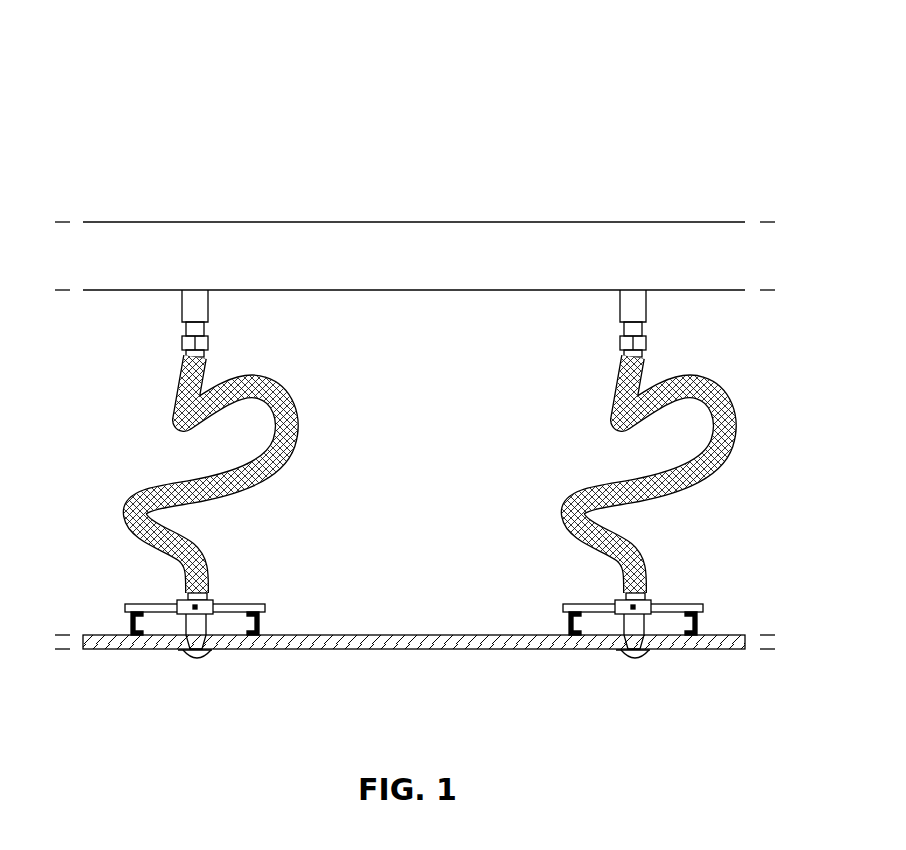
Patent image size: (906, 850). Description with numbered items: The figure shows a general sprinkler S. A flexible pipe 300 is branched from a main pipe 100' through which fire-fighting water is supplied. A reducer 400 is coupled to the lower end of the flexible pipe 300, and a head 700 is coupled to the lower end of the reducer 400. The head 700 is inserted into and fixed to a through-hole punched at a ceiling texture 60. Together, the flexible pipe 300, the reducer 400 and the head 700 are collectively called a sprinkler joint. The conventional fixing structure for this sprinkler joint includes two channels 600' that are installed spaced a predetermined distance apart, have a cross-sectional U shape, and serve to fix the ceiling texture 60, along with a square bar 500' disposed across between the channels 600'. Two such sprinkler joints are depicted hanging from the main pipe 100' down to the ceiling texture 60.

The sprinkler S is at (589, 122).
The main pipe 100' is at (415, 218).
The flexible pipe 300 is at (286, 406).
The reducer 400 is at (212, 625).
The square bar 500' is at (248, 581).
The channels 600' is at (248, 618).
The head 700 is at (205, 660).
The ceiling texture 60 is at (412, 650).